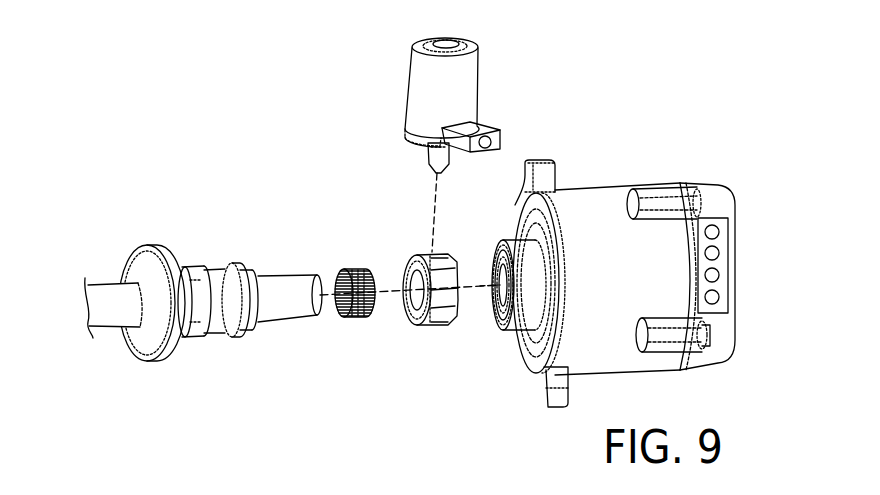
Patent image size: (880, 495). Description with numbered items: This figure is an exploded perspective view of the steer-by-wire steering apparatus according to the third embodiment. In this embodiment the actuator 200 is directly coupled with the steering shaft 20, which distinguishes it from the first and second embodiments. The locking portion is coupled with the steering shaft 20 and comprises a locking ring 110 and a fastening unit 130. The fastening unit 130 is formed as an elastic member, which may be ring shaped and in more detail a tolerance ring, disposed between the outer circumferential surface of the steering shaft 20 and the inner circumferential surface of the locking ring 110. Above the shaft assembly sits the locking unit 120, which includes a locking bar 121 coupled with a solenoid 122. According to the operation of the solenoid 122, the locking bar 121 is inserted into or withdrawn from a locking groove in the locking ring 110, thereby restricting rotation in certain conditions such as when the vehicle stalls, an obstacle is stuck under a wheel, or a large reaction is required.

The steering shaft 20 is at (105, 322).
The locking ring 110 is at (430, 327).
The locking unit 120 is at (333, 73).
The locking bar 121 is at (433, 168).
The solenoid 122 is at (416, 101).
The fastening unit 130 is at (353, 320).
The actuator 200 is at (598, 208).